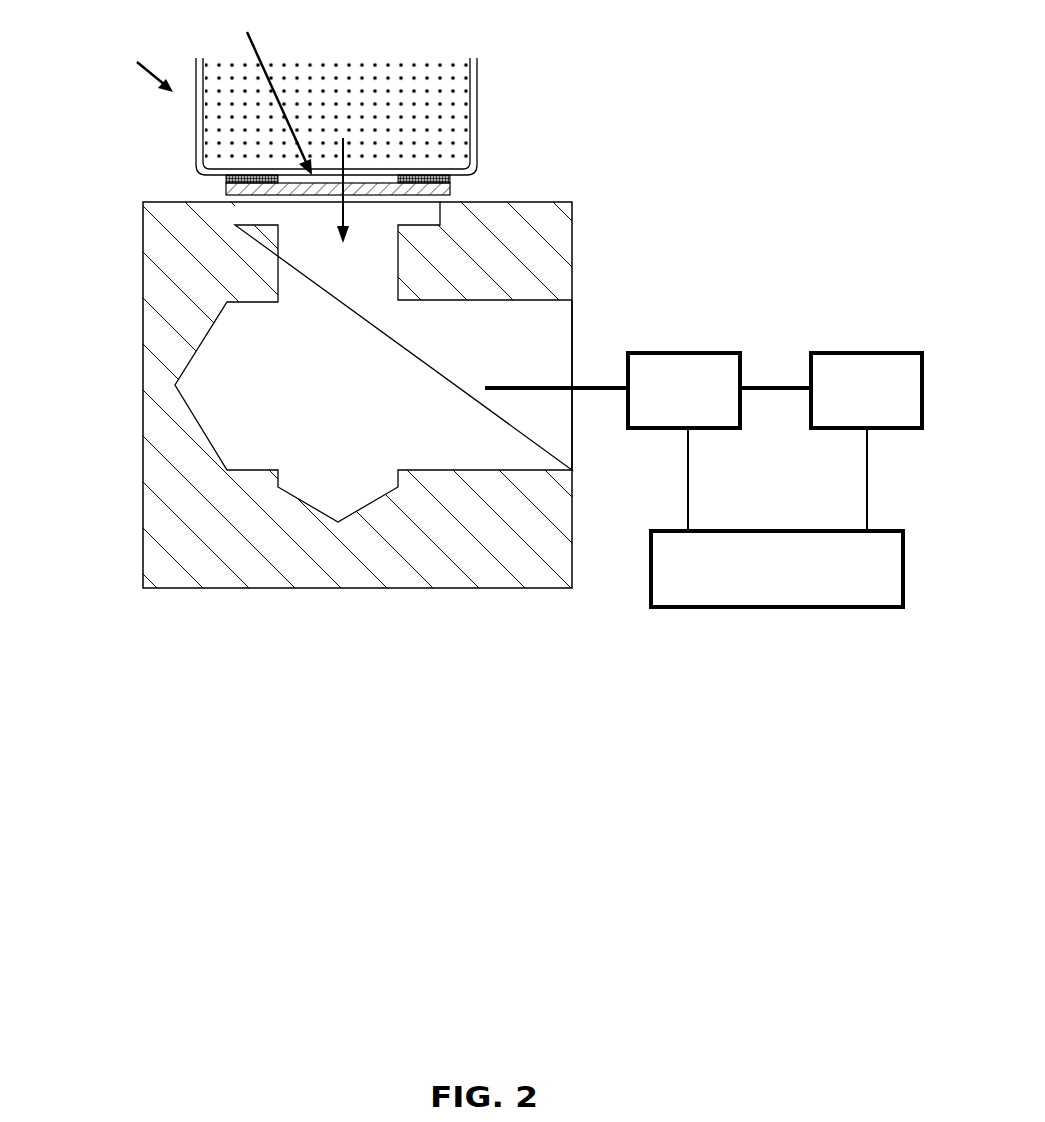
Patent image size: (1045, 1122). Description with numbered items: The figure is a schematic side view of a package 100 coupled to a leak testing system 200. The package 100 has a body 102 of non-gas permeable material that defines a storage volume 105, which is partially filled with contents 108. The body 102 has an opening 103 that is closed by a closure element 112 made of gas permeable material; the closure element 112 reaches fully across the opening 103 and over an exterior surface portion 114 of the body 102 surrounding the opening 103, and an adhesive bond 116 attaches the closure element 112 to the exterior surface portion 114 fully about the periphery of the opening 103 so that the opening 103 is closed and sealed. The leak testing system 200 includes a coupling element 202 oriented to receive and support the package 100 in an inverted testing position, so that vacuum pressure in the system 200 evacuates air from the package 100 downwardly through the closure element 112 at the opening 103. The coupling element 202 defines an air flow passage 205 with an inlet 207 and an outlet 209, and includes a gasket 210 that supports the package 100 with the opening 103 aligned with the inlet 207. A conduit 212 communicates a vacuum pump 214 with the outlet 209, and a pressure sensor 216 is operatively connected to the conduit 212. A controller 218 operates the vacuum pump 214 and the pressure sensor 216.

The package 100 is at (127, 64).
The body 102 is at (195, 132).
The opening 103 is at (262, 87).
The storage volume 105 is at (365, 106).
The contents 108 is at (417, 100).
The closure element 112 is at (450, 187).
The exterior surface portion 114 is at (477, 177).
The adhesive bond 116 is at (227, 180).
The leak testing system 200 is at (761, 148).
The coupling element 202 is at (158, 462).
The air flow passage 205 is at (367, 404).
The inlet 207 is at (339, 211).
The outlet 209 is at (582, 330).
The gasket 210 is at (258, 208).
The conduit 212 is at (770, 388).
The vacuum pump 214 is at (858, 353).
The pressure sensor 216 is at (680, 353).
The controller 218 is at (768, 607).